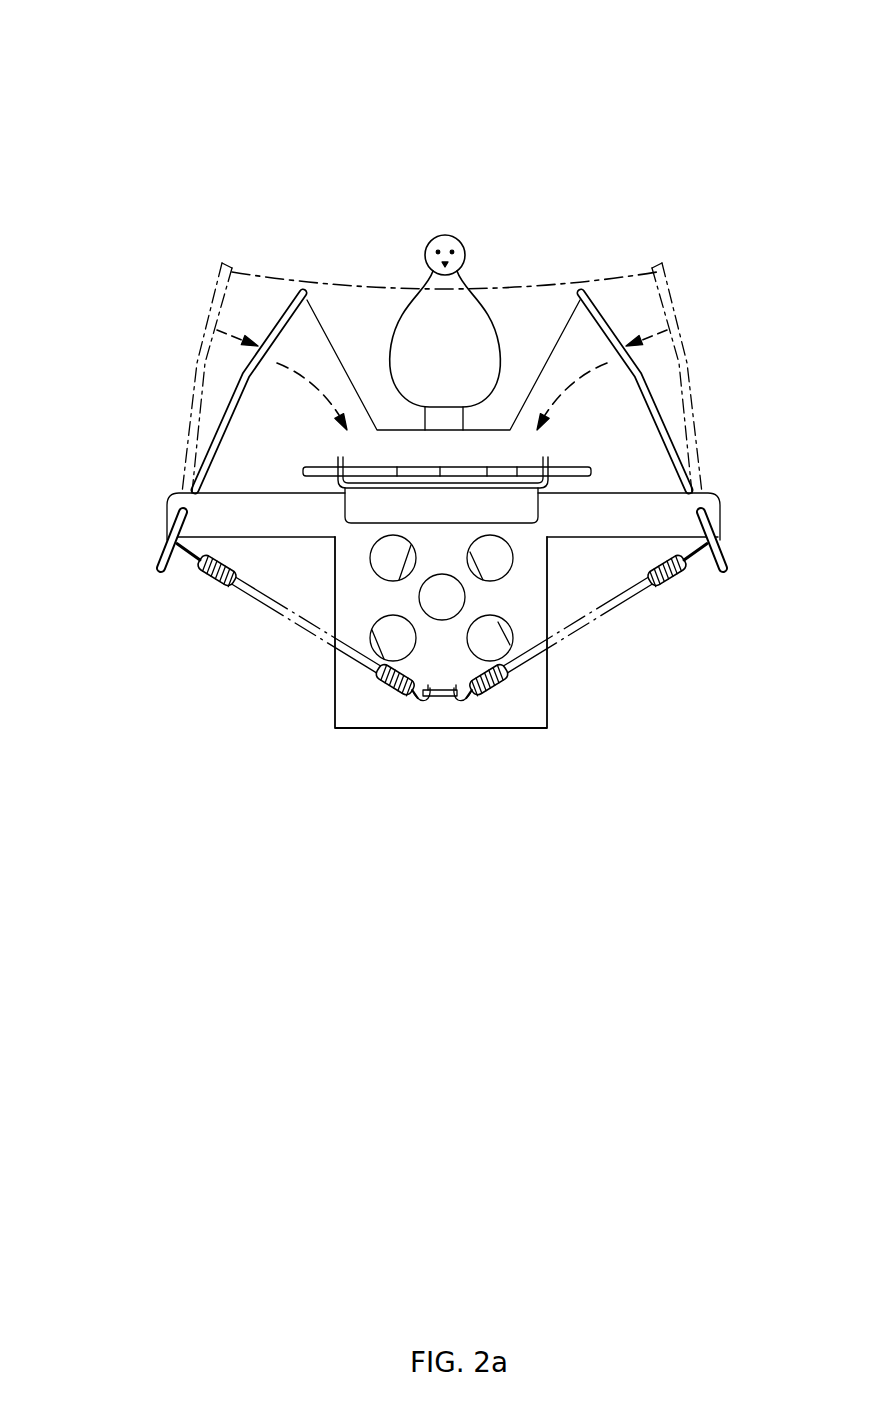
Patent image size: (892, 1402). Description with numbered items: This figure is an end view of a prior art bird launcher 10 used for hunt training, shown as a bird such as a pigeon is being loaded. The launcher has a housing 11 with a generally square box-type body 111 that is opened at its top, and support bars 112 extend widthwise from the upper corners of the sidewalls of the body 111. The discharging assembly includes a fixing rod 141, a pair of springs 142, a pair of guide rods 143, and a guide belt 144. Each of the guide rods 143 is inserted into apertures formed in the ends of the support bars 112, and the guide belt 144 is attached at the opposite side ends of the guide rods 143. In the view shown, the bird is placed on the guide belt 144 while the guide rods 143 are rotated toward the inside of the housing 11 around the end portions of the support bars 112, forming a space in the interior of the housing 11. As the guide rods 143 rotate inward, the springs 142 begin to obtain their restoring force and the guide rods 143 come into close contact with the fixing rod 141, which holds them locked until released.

The bird launcher 10 is at (297, 168).
The housing 11 is at (395, 673).
The body 111 is at (365, 717).
The support bars 112 is at (247, 513).
The fixing rod 141 is at (600, 470).
The pair of springs 142 is at (205, 588).
The pair of guide rods 143 is at (237, 397).
The guide belt 144 is at (555, 340).